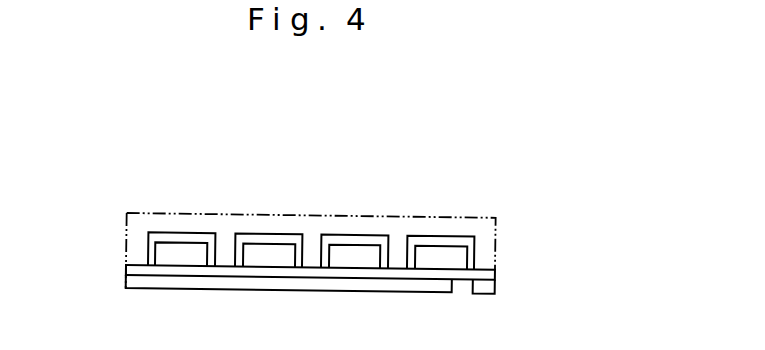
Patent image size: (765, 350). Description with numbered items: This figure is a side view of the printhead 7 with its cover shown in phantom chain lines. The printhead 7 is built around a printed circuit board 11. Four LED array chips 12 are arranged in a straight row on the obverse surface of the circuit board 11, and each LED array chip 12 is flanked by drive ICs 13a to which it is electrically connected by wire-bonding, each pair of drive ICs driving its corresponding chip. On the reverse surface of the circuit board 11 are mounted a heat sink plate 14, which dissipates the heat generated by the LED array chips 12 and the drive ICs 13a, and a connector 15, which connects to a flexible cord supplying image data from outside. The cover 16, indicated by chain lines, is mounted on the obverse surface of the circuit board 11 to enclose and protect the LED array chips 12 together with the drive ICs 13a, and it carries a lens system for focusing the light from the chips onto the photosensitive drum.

The printhead 7 is at (340, 146).
The printed circuit board 11 is at (495, 276).
The LED array chip 12 is at (188, 238).
The drive IC 13a is at (190, 257).
The heat sink plate 14 is at (150, 283).
The connector 15 is at (483, 294).
The cover 16 is at (500, 237).